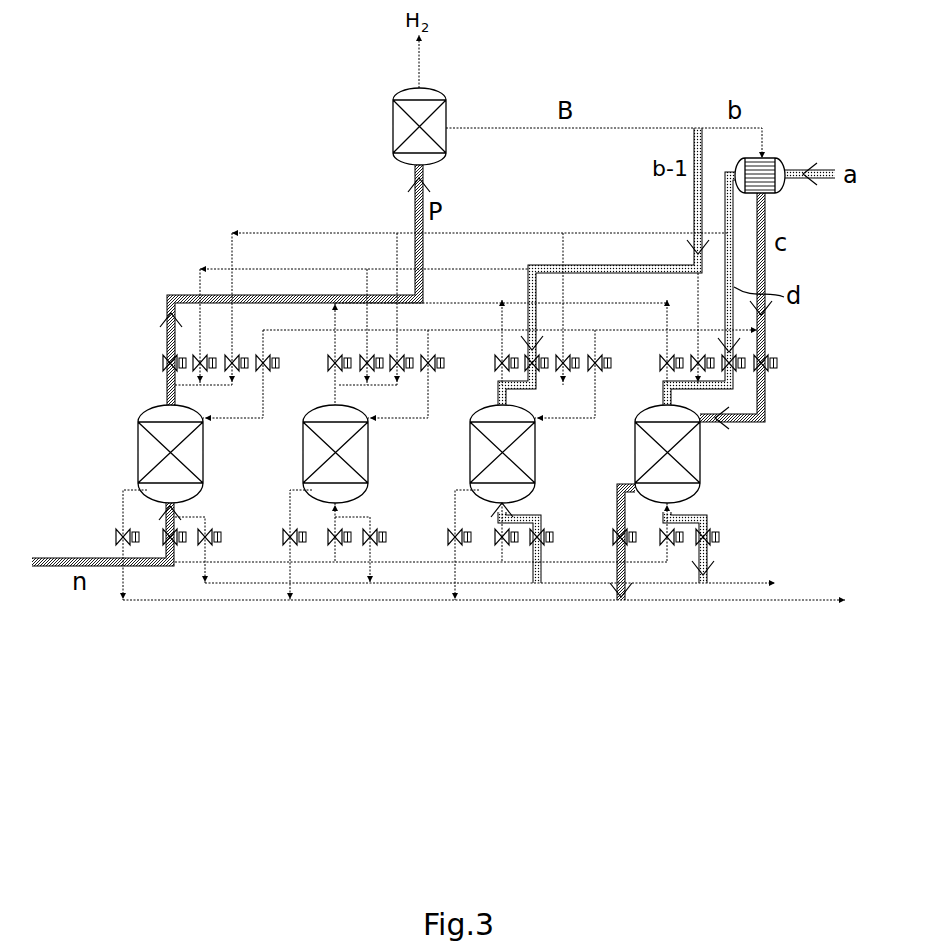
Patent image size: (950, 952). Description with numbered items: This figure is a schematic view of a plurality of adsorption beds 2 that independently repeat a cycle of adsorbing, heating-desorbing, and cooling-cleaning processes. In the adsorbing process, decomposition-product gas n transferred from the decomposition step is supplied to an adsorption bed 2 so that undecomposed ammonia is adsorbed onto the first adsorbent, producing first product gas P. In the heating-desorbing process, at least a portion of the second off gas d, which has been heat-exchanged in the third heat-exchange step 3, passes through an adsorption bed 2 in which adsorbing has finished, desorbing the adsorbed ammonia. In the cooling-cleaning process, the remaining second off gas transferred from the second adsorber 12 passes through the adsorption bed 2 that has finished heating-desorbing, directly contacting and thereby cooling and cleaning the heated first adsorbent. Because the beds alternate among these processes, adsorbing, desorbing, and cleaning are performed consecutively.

The second adsorber 12 is at (393, 127).
The third heat-exchange step 3 is at (777, 158).
The adsorption bed 2 is at (138, 452).